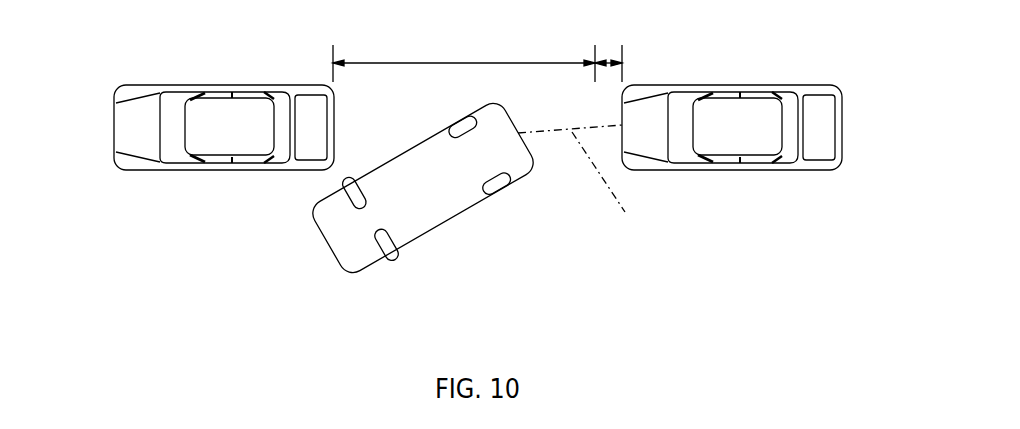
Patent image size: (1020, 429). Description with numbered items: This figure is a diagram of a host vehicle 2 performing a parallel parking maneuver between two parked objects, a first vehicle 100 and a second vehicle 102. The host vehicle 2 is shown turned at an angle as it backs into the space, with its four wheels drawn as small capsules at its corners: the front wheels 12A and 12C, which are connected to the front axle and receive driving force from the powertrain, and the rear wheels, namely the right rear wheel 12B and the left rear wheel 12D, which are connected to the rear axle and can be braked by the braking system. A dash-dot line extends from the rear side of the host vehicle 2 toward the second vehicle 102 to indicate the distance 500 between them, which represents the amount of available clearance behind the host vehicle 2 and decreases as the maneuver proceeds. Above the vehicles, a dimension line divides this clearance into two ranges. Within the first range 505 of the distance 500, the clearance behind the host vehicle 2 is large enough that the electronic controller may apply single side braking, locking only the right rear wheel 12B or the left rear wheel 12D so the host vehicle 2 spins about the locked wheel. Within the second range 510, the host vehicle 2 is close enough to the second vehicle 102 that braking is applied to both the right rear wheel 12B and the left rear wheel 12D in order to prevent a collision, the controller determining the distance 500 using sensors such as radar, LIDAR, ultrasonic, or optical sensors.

The host vehicle 2 is at (342, 233).
The front wheel 12A is at (352, 188).
The right rear wheel 12B is at (456, 122).
The front wheel 12C is at (390, 250).
The left rear wheel 12D is at (497, 185).
The first vehicle 100 is at (125, 132).
The second vehicle 102 is at (830, 122).
The distance 500 is at (642, 208).
The first range 505 is at (478, 63).
The second range 510 is at (607, 62).